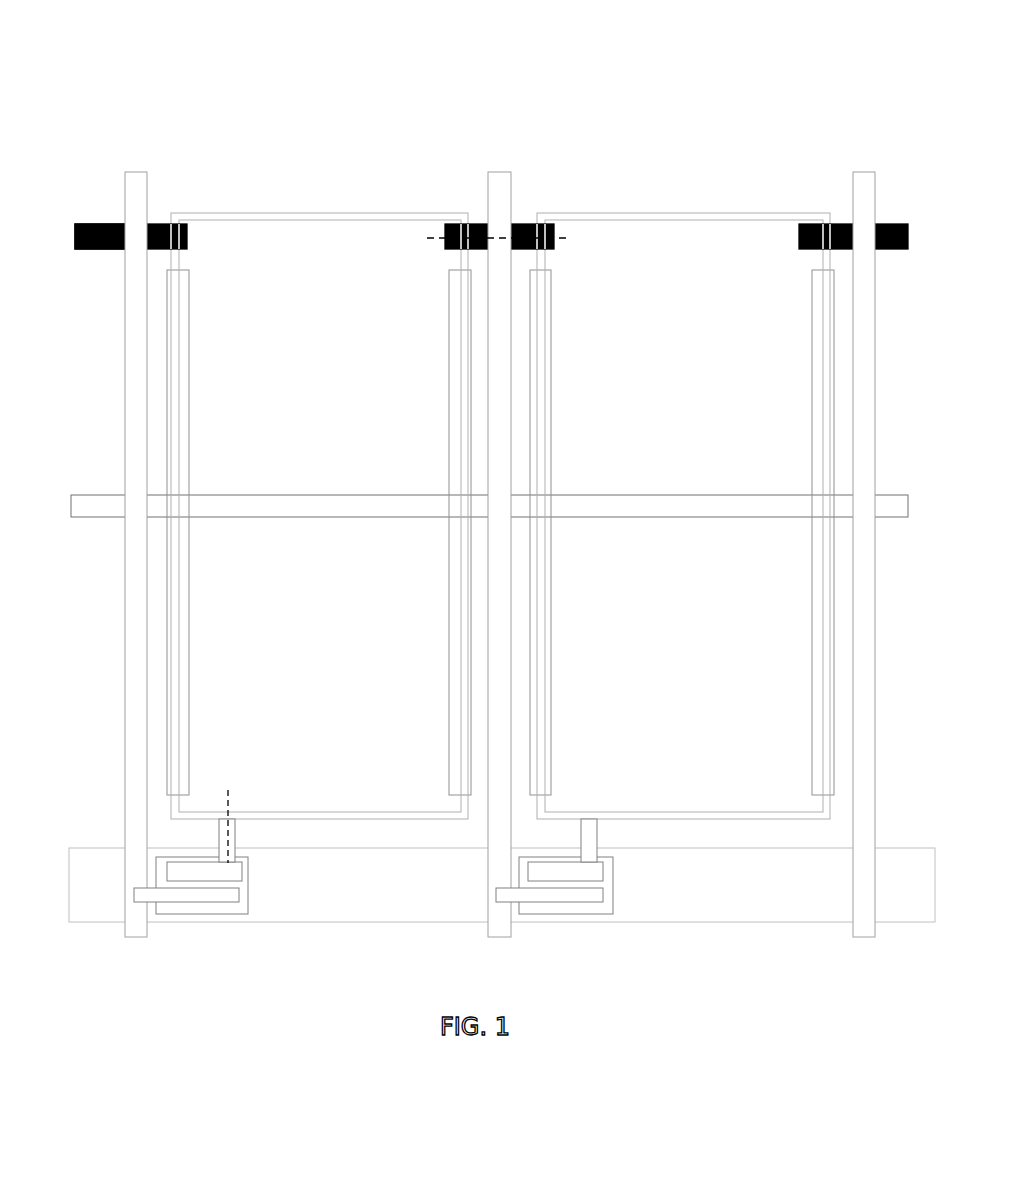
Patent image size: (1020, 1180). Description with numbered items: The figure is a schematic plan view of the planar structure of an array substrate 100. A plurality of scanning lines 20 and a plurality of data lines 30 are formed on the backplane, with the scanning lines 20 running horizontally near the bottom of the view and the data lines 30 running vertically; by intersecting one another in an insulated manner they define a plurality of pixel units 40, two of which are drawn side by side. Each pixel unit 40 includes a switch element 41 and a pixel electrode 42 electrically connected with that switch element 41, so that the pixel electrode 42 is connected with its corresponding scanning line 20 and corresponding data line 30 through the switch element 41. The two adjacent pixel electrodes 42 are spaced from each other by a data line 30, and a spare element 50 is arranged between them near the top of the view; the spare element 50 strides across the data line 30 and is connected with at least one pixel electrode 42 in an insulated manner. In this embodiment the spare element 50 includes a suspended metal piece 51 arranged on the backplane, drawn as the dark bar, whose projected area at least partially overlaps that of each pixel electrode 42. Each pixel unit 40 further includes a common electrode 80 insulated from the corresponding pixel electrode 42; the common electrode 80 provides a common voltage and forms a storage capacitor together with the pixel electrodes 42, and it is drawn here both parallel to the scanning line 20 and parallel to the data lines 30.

The array substrate 100 is at (480, 43).
The scanning line 20 is at (103, 904).
The data line 30 is at (137, 193).
The pixel unit 40 is at (255, 220).
The switch element 41 is at (228, 907).
The pixel electrode 42 is at (335, 267).
The spare element 50 is at (98, 198).
The suspended metal piece 51 is at (92, 250).
The common electrode 80 is at (185, 383).